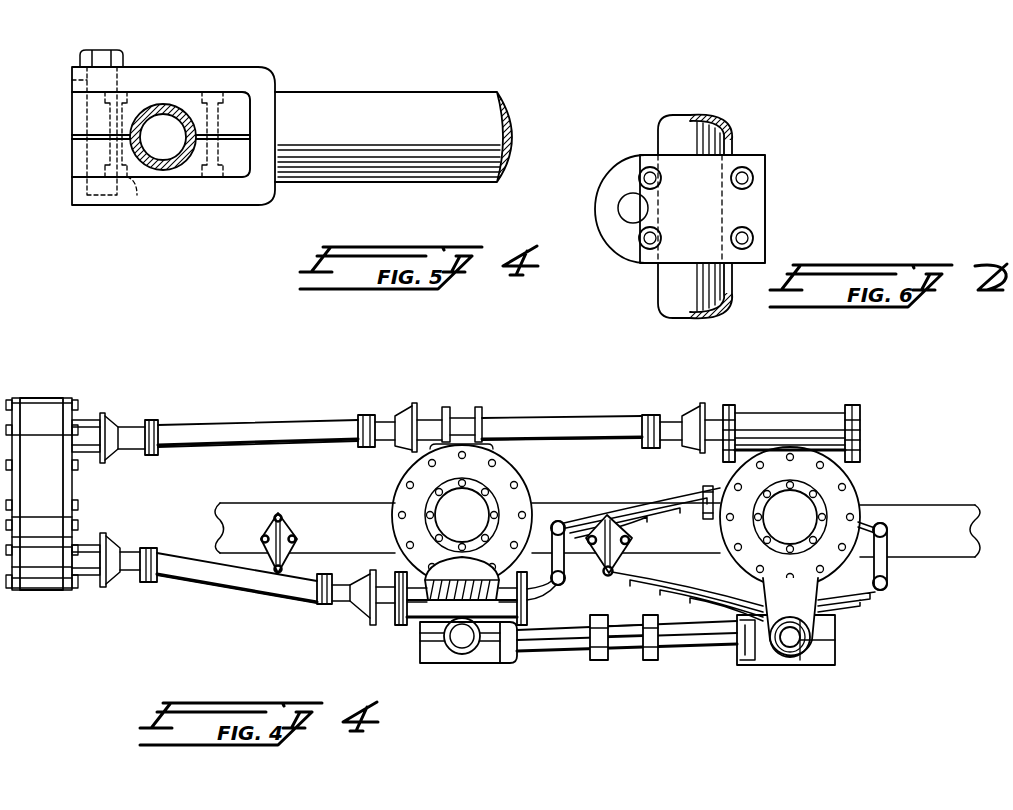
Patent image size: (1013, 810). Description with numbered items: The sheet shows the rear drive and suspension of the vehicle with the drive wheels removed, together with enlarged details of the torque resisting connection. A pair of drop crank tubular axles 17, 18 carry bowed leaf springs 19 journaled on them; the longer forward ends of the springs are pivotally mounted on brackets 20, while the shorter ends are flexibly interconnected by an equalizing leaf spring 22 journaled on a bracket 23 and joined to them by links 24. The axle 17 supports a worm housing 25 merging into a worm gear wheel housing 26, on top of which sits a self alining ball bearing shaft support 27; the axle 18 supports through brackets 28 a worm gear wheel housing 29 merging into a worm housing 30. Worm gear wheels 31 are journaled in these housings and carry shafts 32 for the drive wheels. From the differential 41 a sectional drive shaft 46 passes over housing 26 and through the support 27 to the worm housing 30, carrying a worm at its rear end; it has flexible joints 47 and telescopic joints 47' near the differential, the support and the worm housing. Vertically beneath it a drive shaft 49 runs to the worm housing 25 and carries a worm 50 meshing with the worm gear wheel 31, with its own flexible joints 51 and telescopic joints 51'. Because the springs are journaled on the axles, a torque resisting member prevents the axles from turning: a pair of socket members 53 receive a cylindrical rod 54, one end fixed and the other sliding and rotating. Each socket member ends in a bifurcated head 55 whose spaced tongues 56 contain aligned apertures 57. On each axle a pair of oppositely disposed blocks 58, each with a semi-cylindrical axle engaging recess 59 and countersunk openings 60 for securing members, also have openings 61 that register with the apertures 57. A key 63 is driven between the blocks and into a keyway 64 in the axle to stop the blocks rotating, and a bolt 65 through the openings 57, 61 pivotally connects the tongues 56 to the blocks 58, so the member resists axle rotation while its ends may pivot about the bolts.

In FIG. 5, the drop crank tubular axle 17 is at (277, 145).
In FIG. 6, the drop crank tubular axle 17 is at (680, 285).
In FIG. 4, the drop crank tubular axle 17 is at (430, 660).
In FIG. 4, the drop crank tubular axle 18 is at (800, 662).
In FIG. 4, the bowed leaf spring 19 is at (695, 592).
In FIG. 4, the bracket 20 is at (285, 525).
In FIG. 4, the equalizing leaf spring 22 is at (652, 513).
In FIG. 4, the bracket 23 is at (709, 495).
In FIG. 4, the link 24 is at (560, 520).
In FIG. 4, the worm housing 25 is at (603, 573).
In FIG. 4, the worm gear wheel housing 26 is at (405, 486).
In FIG. 4, the self alining ball bearing shaft support 27 is at (460, 415).
In FIG. 4, the bracket 28 is at (870, 602).
In FIG. 4, the worm gear wheel housing 29 is at (875, 497).
In FIG. 4, the worm housing 30 is at (817, 422).
In FIG. 4, the worm gear wheel 31 is at (440, 570).
In FIG. 4, the shaft 32 is at (533, 433).
In FIG. 4, the differential 41 is at (55, 405).
In FIG. 4, the sectional drive shaft 46 is at (290, 430).
In FIG. 4, the flexible joint 47 is at (397, 424).
In FIG. 4, the telescopic joint 47' is at (404, 445).
In FIG. 4, the drive shaft 49 is at (245, 600).
In FIG. 4, the worm 50 is at (518, 572).
In FIG. 4, the flexible joint 51 is at (233, 568).
In FIG. 4, the telescopic joint 51' is at (236, 566).
In FIG. 4, the socket member 53 is at (576, 636).
In FIG. 4, the cylindrical rod 54 is at (615, 630).
In FIG. 5, the bifurcated head 55 is at (278, 93).
In FIG. 4, the bifurcated head 55 is at (465, 663).
In FIG. 5, the tongue 56 is at (176, 67).
In FIG. 5, the aperture 57 is at (75, 80).
In FIG. 5, the block 58 is at (102, 114).
In FIG. 6, the block 58 is at (700, 215).
In FIG. 4, the block 58 is at (420, 646).
In FIG. 5, the axle engaging recess 59 is at (160, 104).
In FIG. 6, the countersunk opening 60 is at (650, 166).
In FIG. 6, the opening 61 is at (628, 214).
In FIG. 5, the key 63 is at (253, 90).
In FIG. 6, the key 63 is at (742, 155).
In FIG. 5, the keyway 64 is at (214, 110).
In FIG. 5, the bolt 65 is at (103, 52).